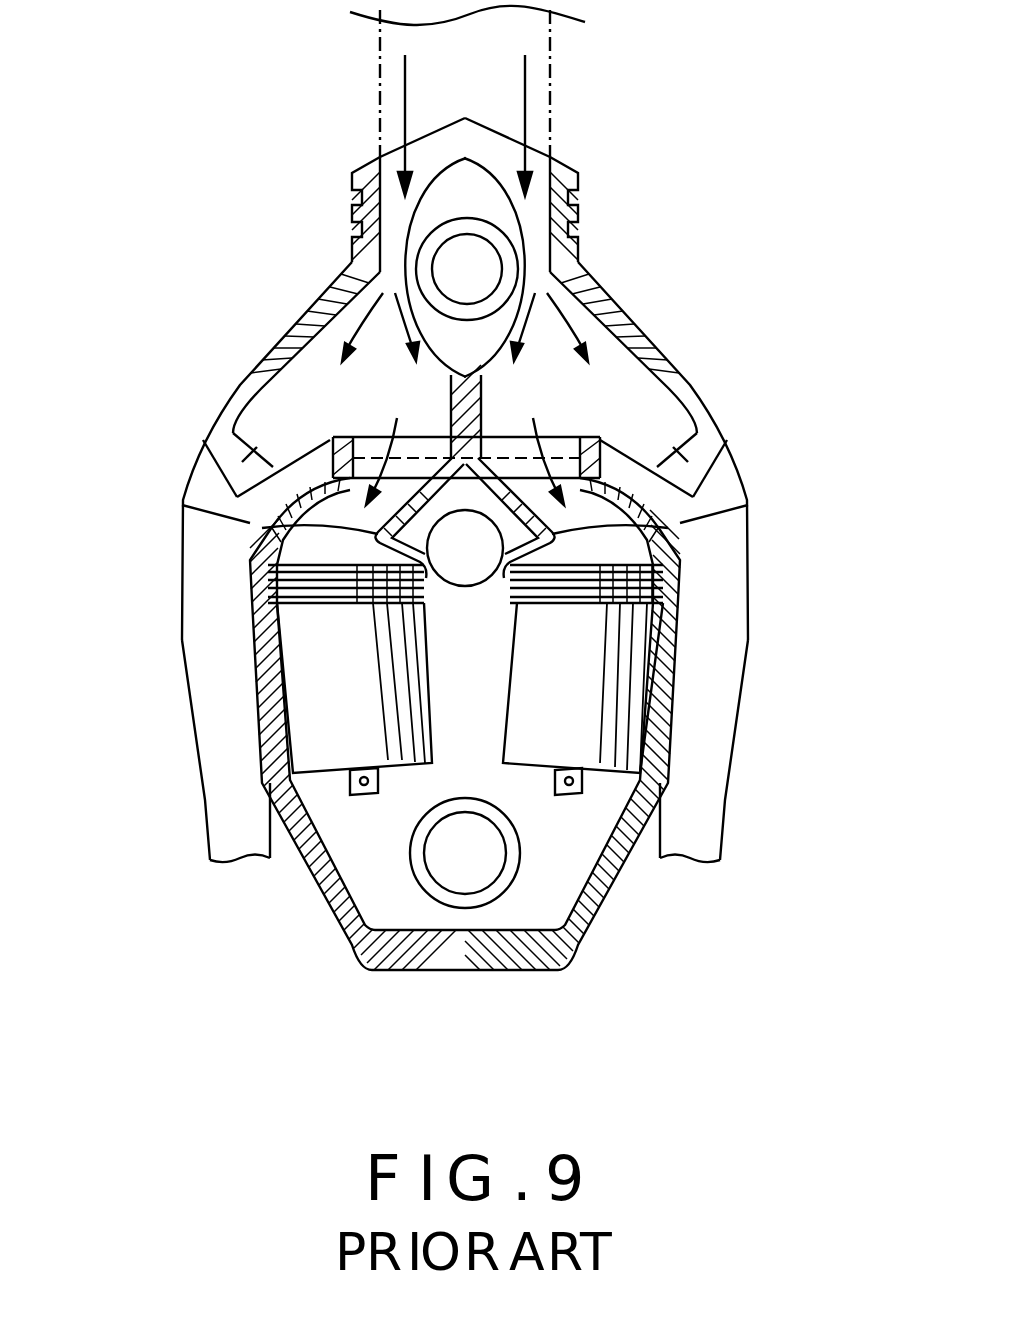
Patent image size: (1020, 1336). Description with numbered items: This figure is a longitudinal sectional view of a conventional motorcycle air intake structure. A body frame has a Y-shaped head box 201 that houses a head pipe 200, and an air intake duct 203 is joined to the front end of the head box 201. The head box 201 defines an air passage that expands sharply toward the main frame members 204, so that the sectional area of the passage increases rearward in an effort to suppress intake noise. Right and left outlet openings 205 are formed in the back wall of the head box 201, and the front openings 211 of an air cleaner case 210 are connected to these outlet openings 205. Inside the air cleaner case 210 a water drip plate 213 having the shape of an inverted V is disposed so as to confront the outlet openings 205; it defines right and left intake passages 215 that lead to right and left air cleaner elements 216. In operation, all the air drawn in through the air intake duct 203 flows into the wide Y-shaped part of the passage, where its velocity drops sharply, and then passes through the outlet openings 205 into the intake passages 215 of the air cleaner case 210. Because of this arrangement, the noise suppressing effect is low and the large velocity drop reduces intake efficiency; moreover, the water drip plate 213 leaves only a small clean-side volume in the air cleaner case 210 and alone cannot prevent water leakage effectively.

The head pipe 200 is at (445, 259).
The Y-shaped head box 201 is at (583, 212).
The air intake duct 203 is at (380, 82).
The main frame members 204 is at (225, 805).
The outlet openings 205 is at (387, 443).
The air cleaner case 210 is at (597, 930).
The front openings 211 is at (353, 437).
The water drip plate 213 is at (262, 527).
The intake passages 215 is at (300, 553).
The air cleaner elements 216 is at (330, 690).